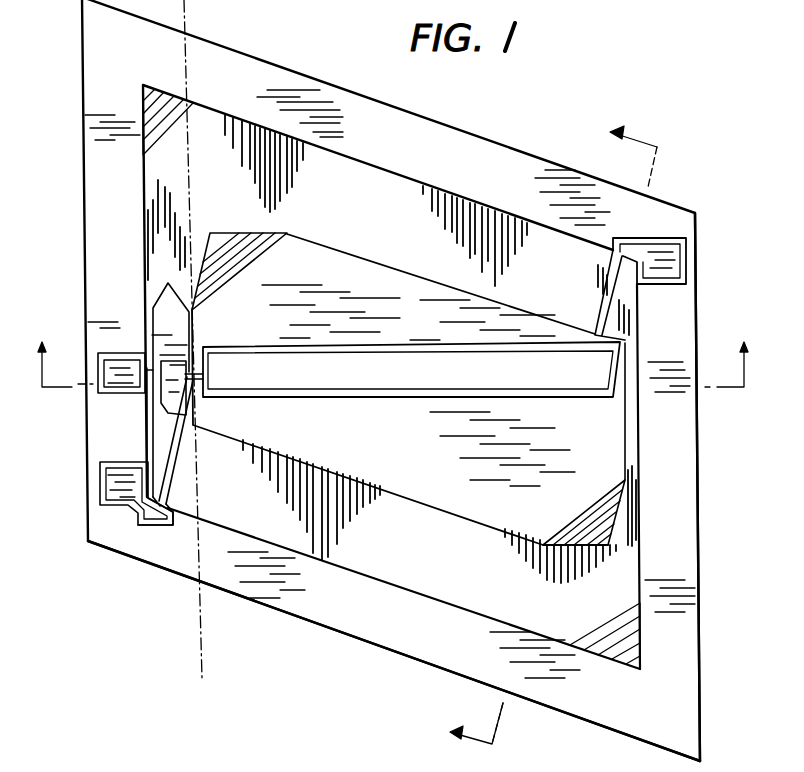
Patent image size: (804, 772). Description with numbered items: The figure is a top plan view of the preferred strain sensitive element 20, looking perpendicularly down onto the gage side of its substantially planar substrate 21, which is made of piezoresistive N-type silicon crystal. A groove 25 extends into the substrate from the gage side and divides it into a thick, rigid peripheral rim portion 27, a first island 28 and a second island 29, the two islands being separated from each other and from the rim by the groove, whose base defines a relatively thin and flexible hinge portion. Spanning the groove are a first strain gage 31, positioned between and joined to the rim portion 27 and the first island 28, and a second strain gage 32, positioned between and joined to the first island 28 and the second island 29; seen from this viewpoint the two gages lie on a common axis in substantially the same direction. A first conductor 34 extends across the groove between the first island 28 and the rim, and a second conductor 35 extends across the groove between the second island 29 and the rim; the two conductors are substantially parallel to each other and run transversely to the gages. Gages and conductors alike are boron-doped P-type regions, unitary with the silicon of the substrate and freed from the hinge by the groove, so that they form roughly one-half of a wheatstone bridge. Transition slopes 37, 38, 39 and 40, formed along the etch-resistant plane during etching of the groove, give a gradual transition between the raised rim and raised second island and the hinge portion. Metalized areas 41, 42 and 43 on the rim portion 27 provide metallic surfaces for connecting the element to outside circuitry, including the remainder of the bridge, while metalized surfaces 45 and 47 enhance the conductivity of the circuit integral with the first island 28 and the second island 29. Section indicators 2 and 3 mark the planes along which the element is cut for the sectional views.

The section line 2- 2 is at (389, 364).
The section line 3- 3 is at (553, 440).
The strain sensitive element 20 is at (715, 474).
The substrate 21 is at (702, 603).
The groove 25 is at (414, 574).
The rigid peripheral rim portion 27 is at (685, 704).
The first island 28 is at (165, 315).
The second island 29 is at (387, 273).
The first strain gage 31 is at (150, 385).
The second strain gage 32 is at (190, 378).
The first conductor 34 is at (178, 466).
The second conductor 35 is at (607, 297).
The transition slope 37 is at (140, 107).
The transition slope 38 is at (220, 252).
The transition slope 39 is at (604, 519).
The transition slope 40 is at (607, 643).
The metalized area 41 is at (148, 373).
The metalized area 42 is at (113, 489).
The metalized area 43 is at (673, 252).
The metalized surface 45 is at (170, 362).
The metalized surface 47 is at (473, 363).